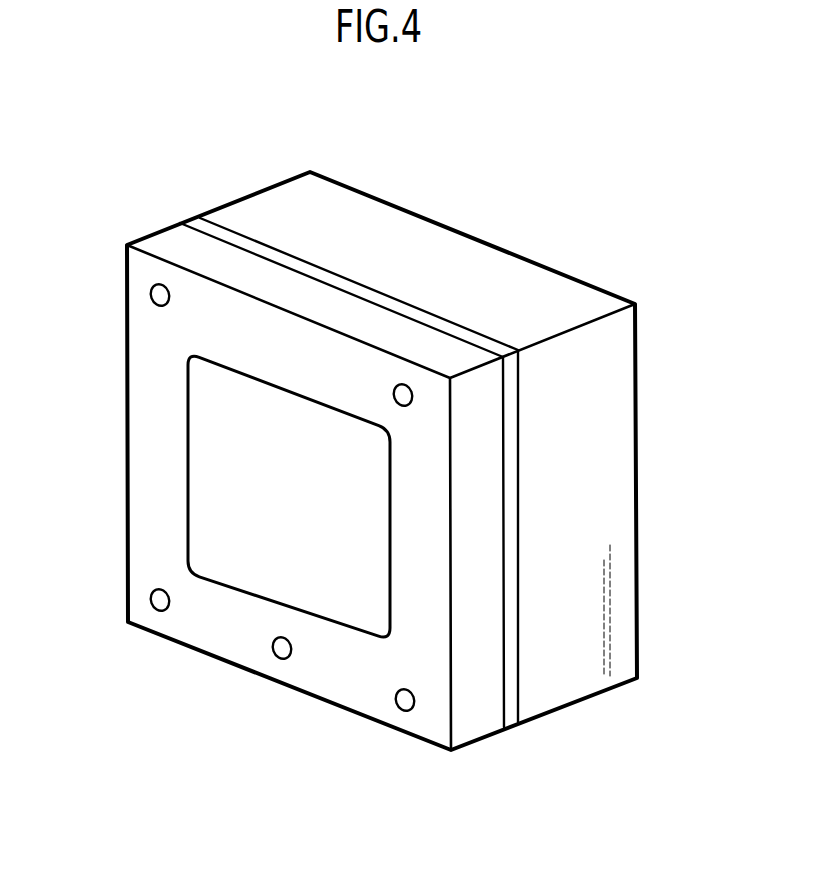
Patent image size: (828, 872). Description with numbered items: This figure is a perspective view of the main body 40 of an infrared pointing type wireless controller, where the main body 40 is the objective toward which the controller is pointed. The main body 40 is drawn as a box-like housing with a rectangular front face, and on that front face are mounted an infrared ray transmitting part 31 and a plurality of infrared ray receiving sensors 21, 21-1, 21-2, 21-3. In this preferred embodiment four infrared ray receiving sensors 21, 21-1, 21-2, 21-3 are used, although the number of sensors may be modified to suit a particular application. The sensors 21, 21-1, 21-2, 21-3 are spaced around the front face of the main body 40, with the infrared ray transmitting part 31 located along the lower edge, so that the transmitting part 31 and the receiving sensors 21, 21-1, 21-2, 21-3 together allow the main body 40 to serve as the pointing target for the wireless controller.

The main body 40 is at (637, 542).
The infrared ray receiving sensor 21 is at (153, 293).
The infrared ray receiving sensor 21-1 is at (160, 603).
The infrared ray receiving sensor 21-2 is at (410, 706).
The infrared ray receiving sensor 21-3 is at (405, 392).
The infrared ray transmitting part 31 is at (282, 652).